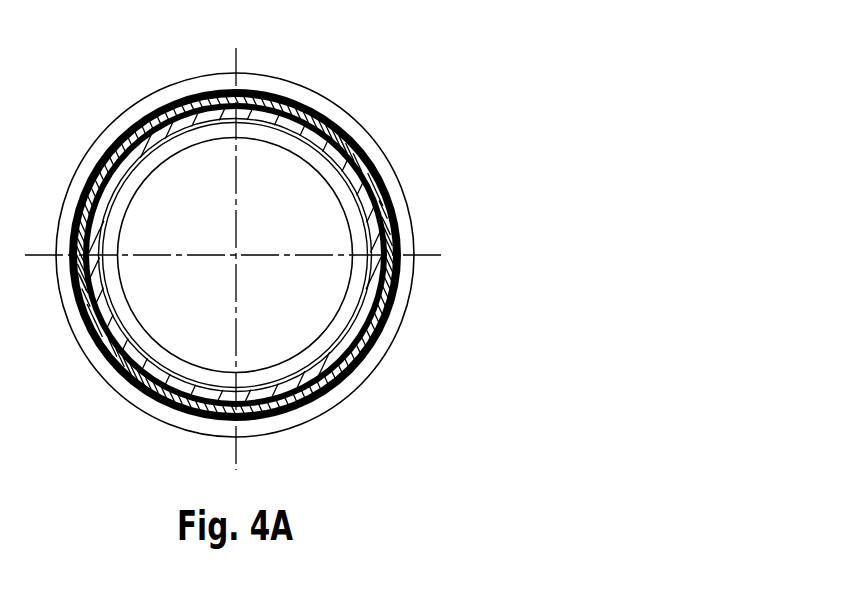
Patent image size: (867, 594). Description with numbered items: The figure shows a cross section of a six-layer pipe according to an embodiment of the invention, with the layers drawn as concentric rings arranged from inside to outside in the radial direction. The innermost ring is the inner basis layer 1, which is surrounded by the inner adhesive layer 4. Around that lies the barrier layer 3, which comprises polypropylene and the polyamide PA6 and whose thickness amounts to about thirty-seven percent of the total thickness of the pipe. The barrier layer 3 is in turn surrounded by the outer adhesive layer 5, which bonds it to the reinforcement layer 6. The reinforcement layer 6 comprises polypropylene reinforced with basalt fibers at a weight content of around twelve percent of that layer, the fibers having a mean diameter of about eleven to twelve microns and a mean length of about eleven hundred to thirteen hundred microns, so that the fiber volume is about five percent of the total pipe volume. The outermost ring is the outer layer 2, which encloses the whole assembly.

The inner basis layer 1 is at (313, 357).
The outer layer 2 is at (358, 134).
The barrier layer 3 is at (374, 164).
The inner adhesive layer 4 is at (380, 200).
The outer adhesive layer 5 is at (403, 237).
The reinforcement layer 6 is at (390, 320).